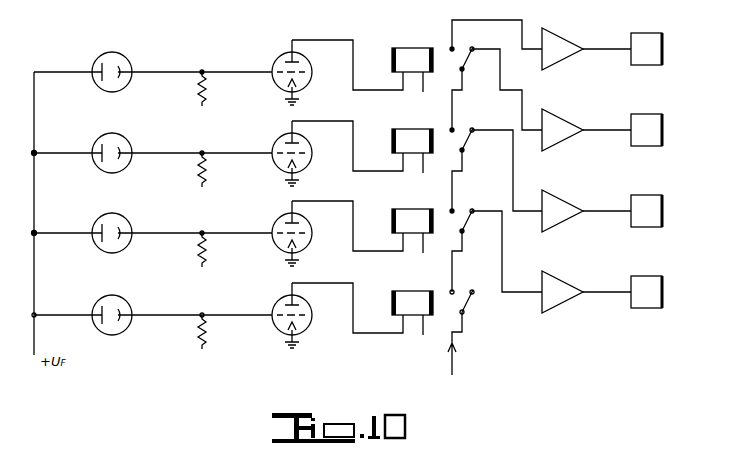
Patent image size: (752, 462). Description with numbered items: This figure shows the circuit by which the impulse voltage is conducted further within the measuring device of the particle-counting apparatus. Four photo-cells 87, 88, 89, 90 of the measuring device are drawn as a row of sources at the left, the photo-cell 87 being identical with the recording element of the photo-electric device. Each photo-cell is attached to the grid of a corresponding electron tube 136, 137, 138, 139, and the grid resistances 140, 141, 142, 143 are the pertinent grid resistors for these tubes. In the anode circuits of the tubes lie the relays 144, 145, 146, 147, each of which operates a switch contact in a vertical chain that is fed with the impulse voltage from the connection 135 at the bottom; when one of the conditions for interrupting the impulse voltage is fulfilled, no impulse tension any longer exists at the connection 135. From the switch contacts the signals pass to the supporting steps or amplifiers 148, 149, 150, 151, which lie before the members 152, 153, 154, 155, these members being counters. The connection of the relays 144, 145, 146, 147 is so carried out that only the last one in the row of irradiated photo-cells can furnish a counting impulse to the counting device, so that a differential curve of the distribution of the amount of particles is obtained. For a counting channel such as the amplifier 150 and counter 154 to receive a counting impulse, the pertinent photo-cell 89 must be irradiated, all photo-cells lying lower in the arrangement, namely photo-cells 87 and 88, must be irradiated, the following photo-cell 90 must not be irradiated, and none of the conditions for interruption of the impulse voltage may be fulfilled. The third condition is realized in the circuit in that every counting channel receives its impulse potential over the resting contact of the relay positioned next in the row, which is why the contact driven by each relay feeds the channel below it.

The photo-cell 87 is at (124, 301).
The photo-cell 88 is at (124, 219).
The photo-cell 89 is at (124, 139).
The photo-cell 90 is at (124, 58).
The connection 135 is at (464, 346).
The electron tube 136 is at (310, 309).
The electron tube 137 is at (310, 227).
The electron tube 138 is at (310, 147).
The electron tube 139 is at (310, 66).
The grid resistance 140 is at (210, 325).
The grid resistance 141 is at (210, 243).
The grid resistance 142 is at (210, 163).
The grid resistance 143 is at (210, 82).
The relay 144 is at (391, 293).
The relay 145 is at (391, 211).
The relay 146 is at (391, 131).
The relay 147 is at (391, 50).
The amplifier 148 is at (558, 301).
The amplifier 149 is at (558, 220).
The amplifier 150 is at (558, 139).
The amplifier 151 is at (558, 58).
The counter 152 is at (661, 288).
The counter 153 is at (661, 207).
The counter 154 is at (661, 126).
The counter 155 is at (661, 44).